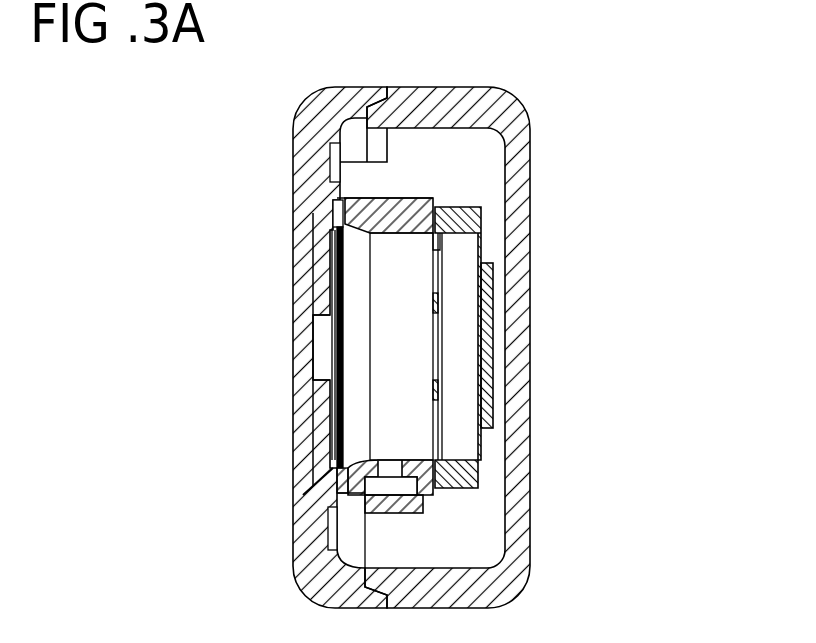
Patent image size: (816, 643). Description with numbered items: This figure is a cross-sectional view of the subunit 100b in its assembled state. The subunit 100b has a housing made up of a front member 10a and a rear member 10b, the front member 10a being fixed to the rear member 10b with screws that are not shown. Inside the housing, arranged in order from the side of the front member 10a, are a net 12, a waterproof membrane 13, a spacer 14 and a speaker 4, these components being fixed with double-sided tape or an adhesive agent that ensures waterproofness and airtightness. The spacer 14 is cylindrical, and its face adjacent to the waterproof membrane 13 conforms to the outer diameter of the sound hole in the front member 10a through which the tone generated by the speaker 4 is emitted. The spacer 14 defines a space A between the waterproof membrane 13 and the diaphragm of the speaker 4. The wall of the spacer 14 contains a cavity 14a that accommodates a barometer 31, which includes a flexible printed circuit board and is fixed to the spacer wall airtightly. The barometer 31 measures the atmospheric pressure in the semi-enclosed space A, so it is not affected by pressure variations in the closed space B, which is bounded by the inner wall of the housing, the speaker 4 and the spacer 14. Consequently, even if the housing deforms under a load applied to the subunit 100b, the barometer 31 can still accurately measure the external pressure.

The subunit 100b is at (600, 75).
The front member 10a is at (317, 93).
The rear member 10b is at (518, 97).
The net 12 is at (313, 213).
The waterproof membrane 13 is at (338, 227).
The spacer 14 is at (464, 300).
The cavity 14a is at (395, 486).
The barometer 31 is at (380, 500).
The speaker 4 is at (502, 266).
The space A is at (417, 354).
The closed space B is at (462, 265).